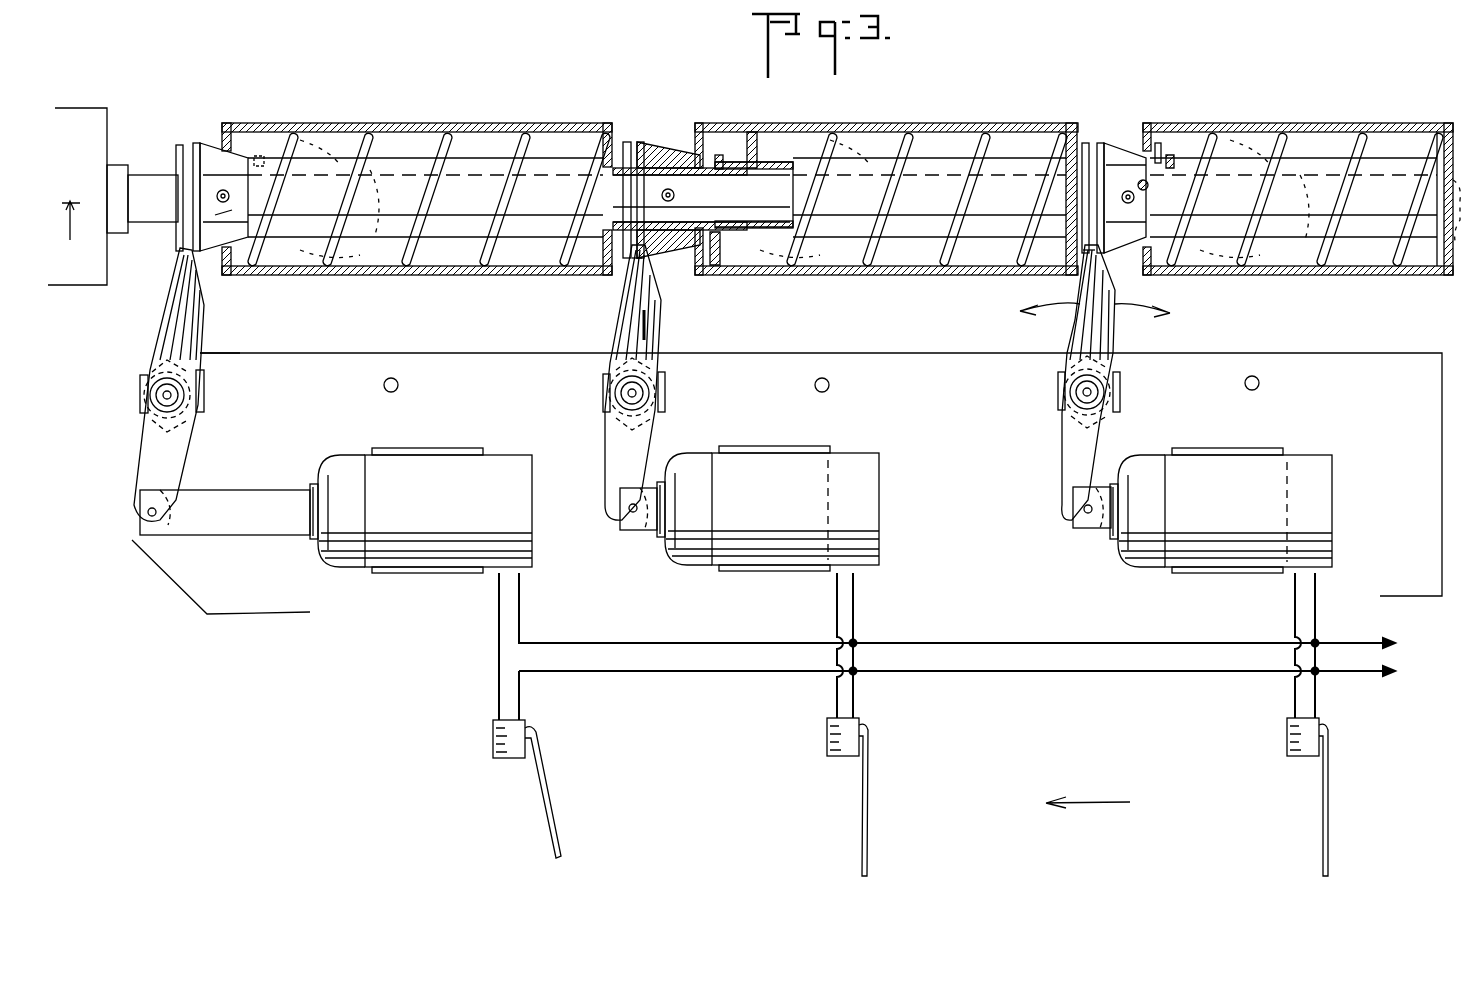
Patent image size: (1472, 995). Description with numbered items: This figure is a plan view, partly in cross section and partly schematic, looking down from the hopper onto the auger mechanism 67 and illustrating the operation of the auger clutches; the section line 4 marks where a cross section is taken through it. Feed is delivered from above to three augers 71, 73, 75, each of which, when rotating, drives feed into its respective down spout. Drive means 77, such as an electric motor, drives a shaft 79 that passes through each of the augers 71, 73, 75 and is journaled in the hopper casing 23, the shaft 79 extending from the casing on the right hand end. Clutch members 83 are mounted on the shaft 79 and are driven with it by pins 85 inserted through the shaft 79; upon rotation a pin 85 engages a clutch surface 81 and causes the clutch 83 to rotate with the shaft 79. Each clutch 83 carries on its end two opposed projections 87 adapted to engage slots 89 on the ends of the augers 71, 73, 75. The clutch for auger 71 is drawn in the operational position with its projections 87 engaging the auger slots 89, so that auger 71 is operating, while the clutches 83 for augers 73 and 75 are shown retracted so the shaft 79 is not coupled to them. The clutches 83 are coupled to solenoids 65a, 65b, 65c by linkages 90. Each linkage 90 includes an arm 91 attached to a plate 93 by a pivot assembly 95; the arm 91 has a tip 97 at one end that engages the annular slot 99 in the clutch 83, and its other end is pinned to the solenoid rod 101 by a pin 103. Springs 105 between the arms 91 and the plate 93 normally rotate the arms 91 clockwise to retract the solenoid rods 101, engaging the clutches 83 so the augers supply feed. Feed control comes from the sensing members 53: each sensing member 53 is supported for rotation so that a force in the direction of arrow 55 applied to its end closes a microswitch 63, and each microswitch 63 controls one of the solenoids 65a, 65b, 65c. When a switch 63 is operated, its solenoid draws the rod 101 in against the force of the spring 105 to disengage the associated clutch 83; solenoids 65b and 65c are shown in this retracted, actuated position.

The section line 4 is at (71, 207).
The hopper casing 23 is at (375, 156).
The sensing member 53 is at (552, 805).
The arrow 55 is at (1088, 789).
The microswitch 63 is at (532, 714).
The solenoid 65a is at (512, 462).
The solenoid 65b is at (842, 452).
The solenoid 65c is at (1290, 458).
The auger mechanism 67 is at (533, 100).
The auger 71 is at (288, 135).
The auger 73 is at (905, 156).
The auger 75 is at (1300, 160).
The drive means 77 is at (98, 106).
The shaft 79 is at (142, 175).
The clutch surface 81 is at (628, 182).
The clutch member 83 is at (180, 145).
The pin 85 is at (223, 190).
The projection 87 is at (262, 156).
The slot 89 is at (735, 160).
The linkage 90 is at (221, 345).
The arm 91 is at (168, 326).
The plate 93 is at (1405, 365).
The pivot assembly 95 is at (185, 400).
The tip 97 is at (645, 270).
The annular slot 99 is at (200, 146).
The solenoid rod 101 is at (225, 537).
The pin 103 is at (156, 508).
The spring 105 is at (200, 365).